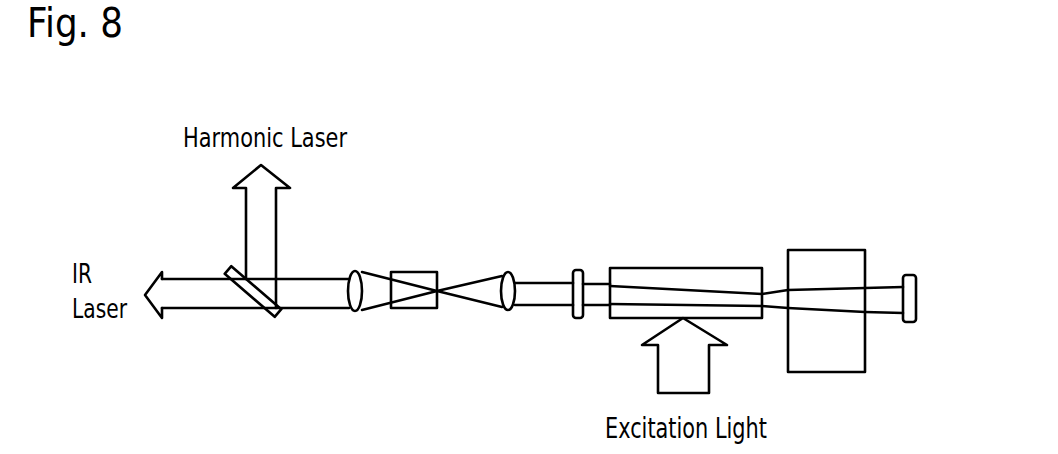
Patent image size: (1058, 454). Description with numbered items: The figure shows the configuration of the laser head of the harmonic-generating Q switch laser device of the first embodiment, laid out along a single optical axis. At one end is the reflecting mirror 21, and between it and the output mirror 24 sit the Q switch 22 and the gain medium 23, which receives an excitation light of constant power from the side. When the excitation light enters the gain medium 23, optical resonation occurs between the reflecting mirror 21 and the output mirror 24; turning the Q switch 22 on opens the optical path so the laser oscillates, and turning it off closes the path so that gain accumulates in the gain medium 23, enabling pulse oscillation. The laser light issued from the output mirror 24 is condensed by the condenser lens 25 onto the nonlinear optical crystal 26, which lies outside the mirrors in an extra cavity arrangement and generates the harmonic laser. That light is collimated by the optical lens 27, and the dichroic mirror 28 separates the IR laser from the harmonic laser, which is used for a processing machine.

The reflecting mirror 21 is at (908, 323).
The Q switch 22 is at (823, 249).
The gain medium 23 is at (685, 268).
The output mirror 24 is at (582, 268).
The condenser lens 25 is at (503, 311).
The nonlinear optical crystal 26 is at (412, 272).
The optical lens 27 is at (350, 309).
The dichroic mirror 28 is at (277, 313).